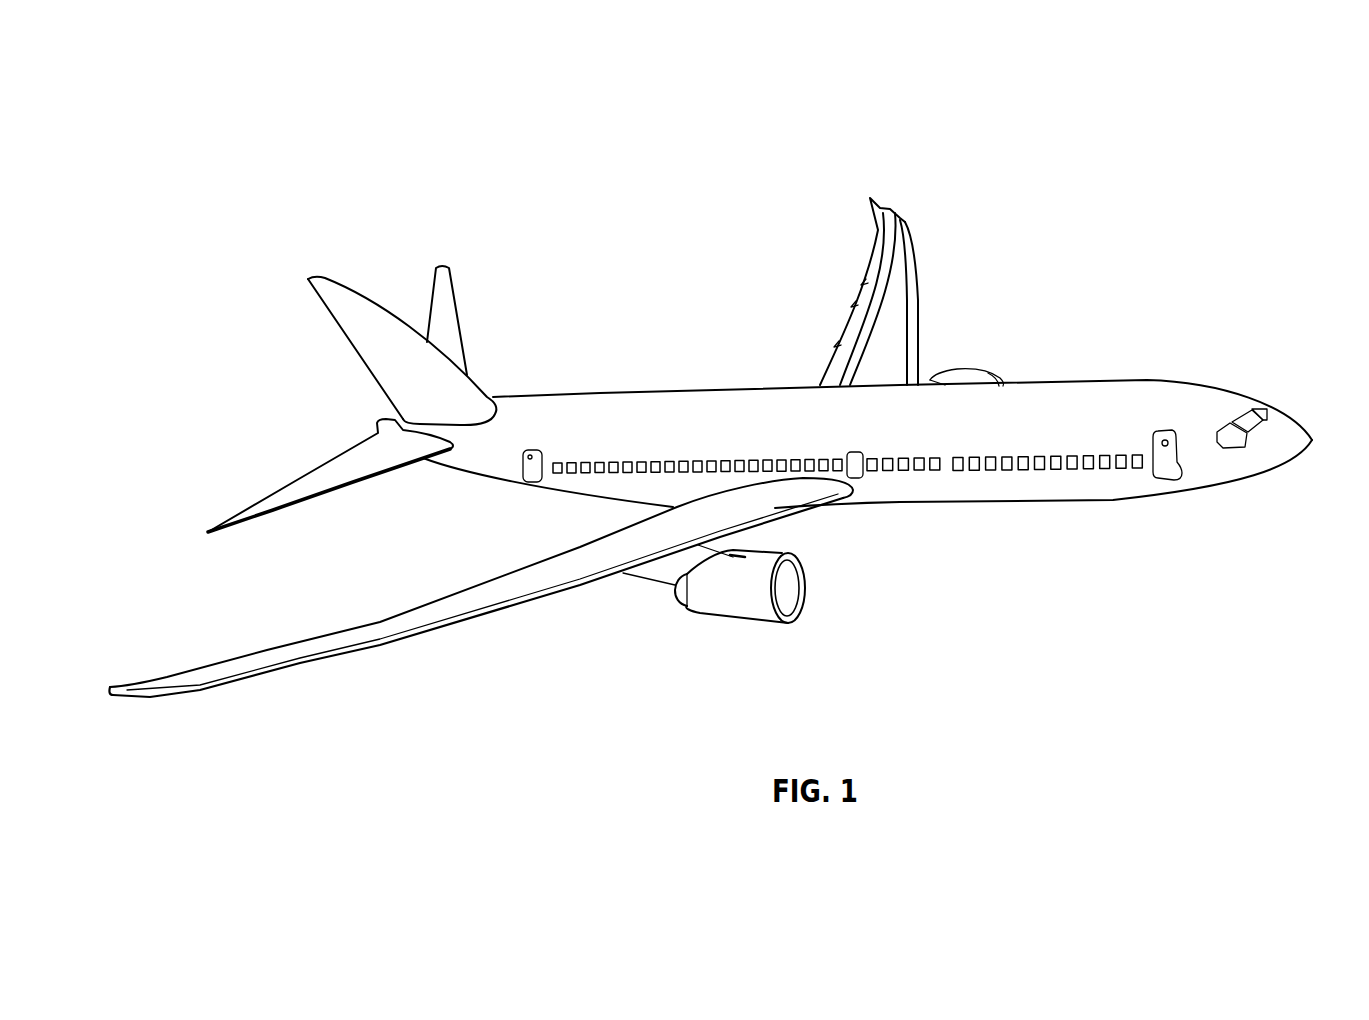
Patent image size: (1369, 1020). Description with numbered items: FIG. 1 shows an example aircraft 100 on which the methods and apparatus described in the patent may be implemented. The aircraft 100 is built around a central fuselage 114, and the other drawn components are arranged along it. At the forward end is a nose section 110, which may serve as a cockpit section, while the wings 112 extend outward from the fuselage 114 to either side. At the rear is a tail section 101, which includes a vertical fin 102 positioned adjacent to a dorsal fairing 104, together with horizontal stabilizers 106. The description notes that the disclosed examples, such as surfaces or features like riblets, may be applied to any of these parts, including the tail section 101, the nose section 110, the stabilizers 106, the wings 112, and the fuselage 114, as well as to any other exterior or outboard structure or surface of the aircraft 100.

The aircraft 100 is at (232, 100).
The tail section 101 is at (285, 255).
The vertical fin 102 is at (377, 343).
The dorsal fairing 104 is at (502, 395).
The horizontal stabilizers 106 is at (273, 513).
The nose section 110 is at (1213, 470).
The wings 112 is at (517, 592).
The fuselage 114 is at (768, 420).